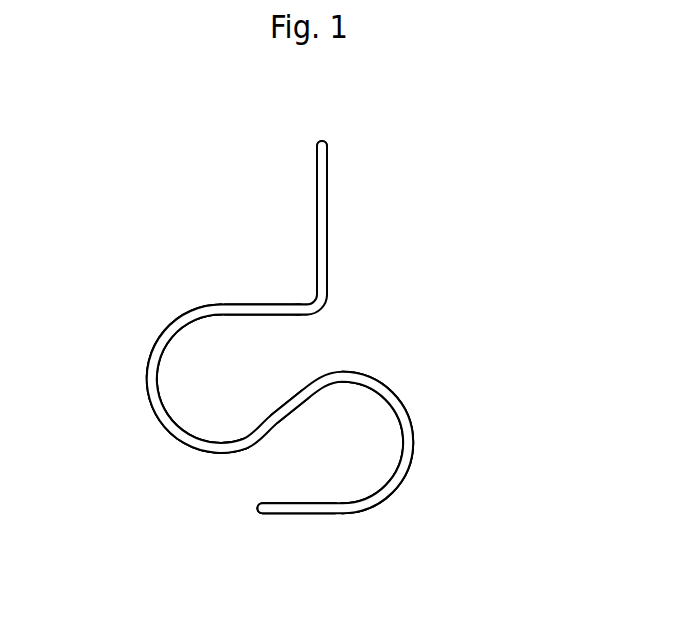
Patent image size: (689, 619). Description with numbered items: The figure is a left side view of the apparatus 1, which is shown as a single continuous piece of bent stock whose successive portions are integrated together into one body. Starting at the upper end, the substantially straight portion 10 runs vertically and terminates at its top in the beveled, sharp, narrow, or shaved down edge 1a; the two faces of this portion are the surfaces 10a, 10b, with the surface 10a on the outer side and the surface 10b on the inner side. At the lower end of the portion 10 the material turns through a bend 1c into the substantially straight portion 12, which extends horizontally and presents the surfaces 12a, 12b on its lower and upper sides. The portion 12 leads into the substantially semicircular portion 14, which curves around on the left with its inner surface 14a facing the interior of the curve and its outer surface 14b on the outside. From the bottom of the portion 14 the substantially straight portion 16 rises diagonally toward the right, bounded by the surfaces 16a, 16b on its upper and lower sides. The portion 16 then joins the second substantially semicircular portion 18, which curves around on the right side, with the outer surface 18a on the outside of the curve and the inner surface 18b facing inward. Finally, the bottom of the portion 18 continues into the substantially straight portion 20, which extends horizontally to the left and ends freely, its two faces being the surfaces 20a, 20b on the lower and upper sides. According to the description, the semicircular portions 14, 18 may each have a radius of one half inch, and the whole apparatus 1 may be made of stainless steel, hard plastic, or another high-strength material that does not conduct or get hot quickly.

The apparatus 1 is at (271, 317).
The edge 1a is at (320, 142).
The bend of clip 1c is at (325, 311).
The portion 10 is at (327, 215).
The surface 10a is at (327, 270).
The surface 10b is at (317, 232).
The portion 12 is at (243, 304).
The surface 12a is at (250, 314).
The surface 12b is at (270, 304).
The portion 14 is at (149, 378).
The surface 14a is at (157, 378).
The surface 14b is at (149, 355).
The portion 16 is at (306, 387).
The surface 16a is at (273, 413).
The surface 16b is at (299, 406).
The portion 18 is at (397, 398).
The surface 18a is at (413, 443).
The surface 18b is at (403, 442).
The portion 20 is at (325, 513).
The surface 20a is at (338, 513).
The surface 20b is at (327, 503).